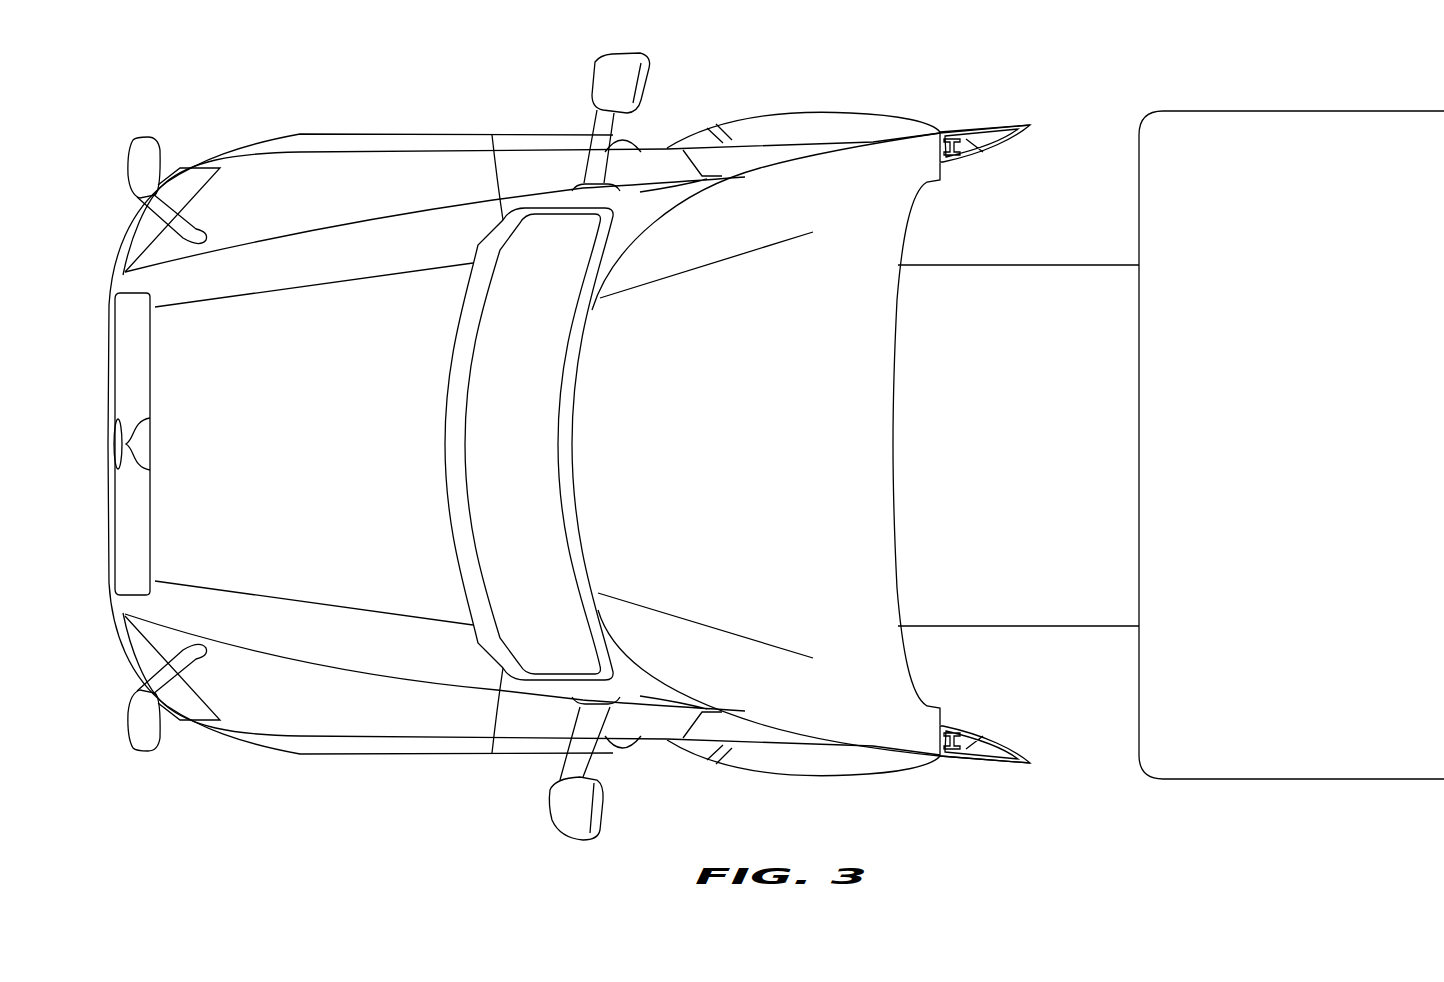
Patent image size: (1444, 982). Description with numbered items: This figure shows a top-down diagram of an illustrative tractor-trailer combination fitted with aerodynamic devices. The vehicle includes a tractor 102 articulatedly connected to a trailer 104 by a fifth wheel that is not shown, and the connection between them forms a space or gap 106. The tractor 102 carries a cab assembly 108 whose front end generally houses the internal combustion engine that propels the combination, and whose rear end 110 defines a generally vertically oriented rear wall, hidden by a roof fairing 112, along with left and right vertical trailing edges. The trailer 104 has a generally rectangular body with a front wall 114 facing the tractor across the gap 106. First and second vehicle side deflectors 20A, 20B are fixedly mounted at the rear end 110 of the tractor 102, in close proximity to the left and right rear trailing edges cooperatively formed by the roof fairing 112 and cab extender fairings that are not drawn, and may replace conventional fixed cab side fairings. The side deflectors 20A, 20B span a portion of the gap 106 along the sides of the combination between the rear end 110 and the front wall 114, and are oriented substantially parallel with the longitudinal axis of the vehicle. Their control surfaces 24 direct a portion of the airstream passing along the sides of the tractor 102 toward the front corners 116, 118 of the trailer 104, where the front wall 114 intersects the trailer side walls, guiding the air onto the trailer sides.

The tractor 102 is at (364, 148).
The trailer 104 is at (1243, 448).
The gap 106 is at (1083, 158).
The cab assembly 108 is at (553, 200).
The rear end 110 is at (869, 118).
The roof fairing 112 is at (794, 222).
The front wall 114 is at (1139, 418).
The front corner 116 is at (1146, 768).
The front corner 118 is at (1145, 120).
The control surface 24 is at (982, 128).
The first vehicle side deflector 20A is at (1020, 792).
The second vehicle side deflector 20B is at (1020, 96).